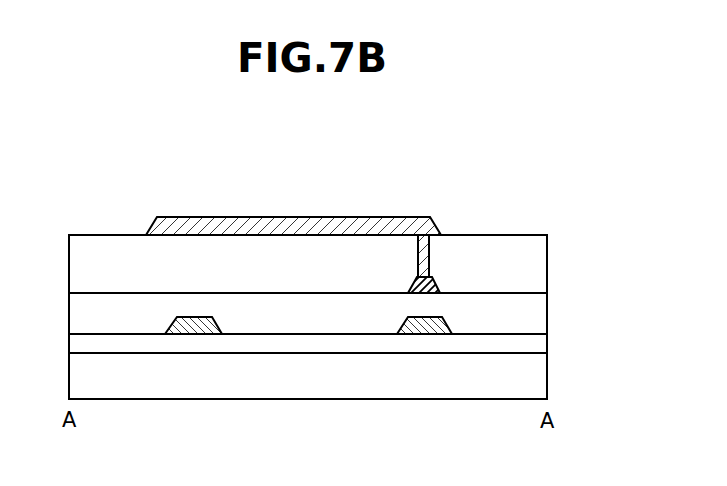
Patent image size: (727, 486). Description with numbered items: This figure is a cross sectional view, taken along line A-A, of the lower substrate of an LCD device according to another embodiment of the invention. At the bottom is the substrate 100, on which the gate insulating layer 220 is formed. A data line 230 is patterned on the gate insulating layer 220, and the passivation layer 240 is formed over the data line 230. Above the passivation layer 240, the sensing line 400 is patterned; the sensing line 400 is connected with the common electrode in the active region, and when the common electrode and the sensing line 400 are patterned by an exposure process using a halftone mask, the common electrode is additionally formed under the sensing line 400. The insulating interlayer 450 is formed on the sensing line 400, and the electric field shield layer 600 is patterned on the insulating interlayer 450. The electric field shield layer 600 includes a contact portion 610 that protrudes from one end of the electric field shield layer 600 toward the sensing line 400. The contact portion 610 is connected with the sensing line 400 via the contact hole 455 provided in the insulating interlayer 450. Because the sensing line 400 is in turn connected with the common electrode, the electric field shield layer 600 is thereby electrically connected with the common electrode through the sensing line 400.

The substrate 100 is at (542, 378).
The gate insulating layer 220 is at (542, 344).
The passivation layer 240 is at (542, 315).
The data line 230 is at (192, 326).
The sensing line 400 is at (440, 291).
The insulating interlayer 450 is at (542, 256).
The contact hole 455 is at (430, 260).
The electric field shield layer 600 is at (207, 218).
The contact portion 610 is at (411, 228).